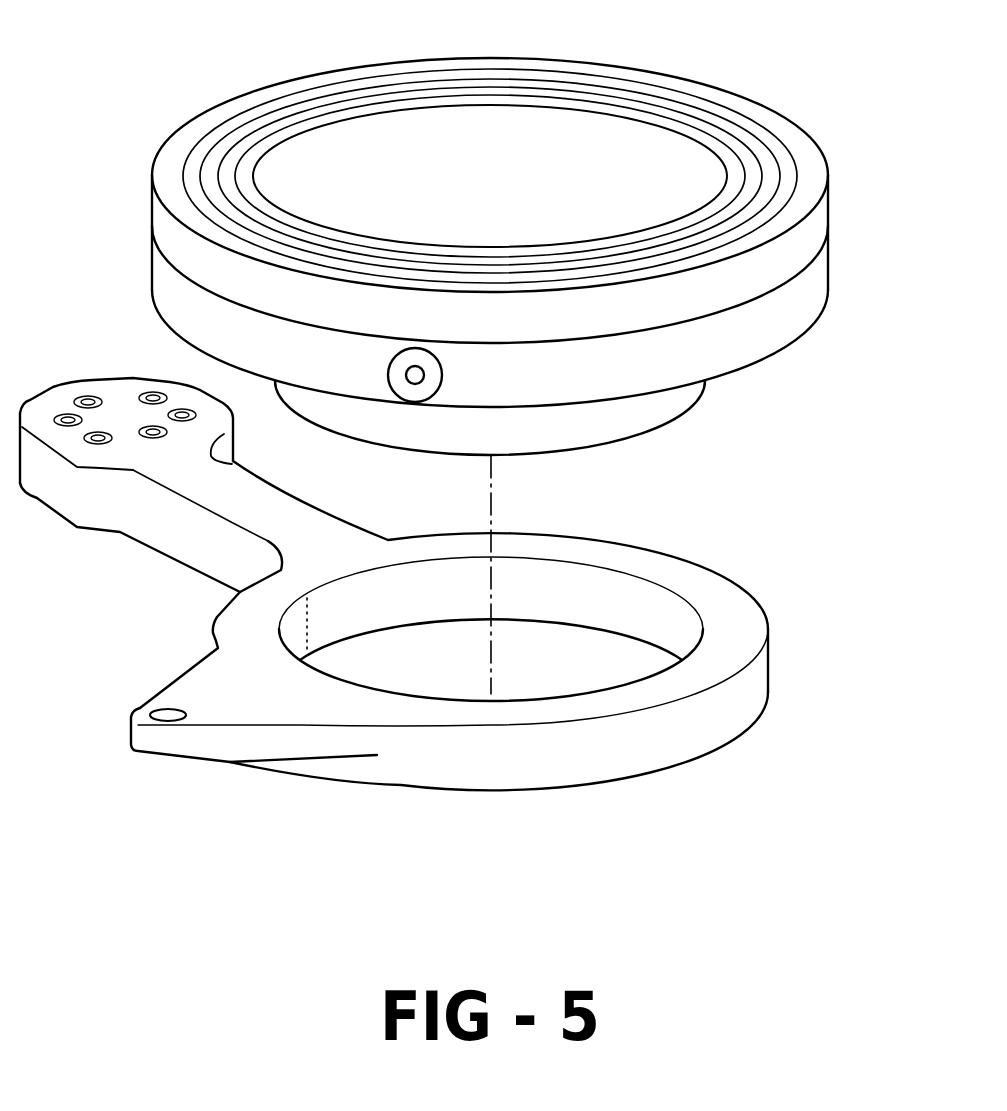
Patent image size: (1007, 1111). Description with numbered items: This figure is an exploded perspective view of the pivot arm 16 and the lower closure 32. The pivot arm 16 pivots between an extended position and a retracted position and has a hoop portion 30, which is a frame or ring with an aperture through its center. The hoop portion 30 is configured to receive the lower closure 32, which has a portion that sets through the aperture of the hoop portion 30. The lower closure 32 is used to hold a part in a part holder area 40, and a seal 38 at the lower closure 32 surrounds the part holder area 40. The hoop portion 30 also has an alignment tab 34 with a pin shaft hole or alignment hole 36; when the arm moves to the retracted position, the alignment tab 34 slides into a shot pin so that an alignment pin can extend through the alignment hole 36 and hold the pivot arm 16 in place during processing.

The pivot arm 16 is at (233, 497).
The hoop portion 30 is at (615, 752).
The lower closure 32 is at (395, 27).
The alignment tab 34 is at (247, 743).
The alignment hole 36 is at (168, 710).
The seal 38 is at (240, 151).
The part holder area 40 is at (507, 193).